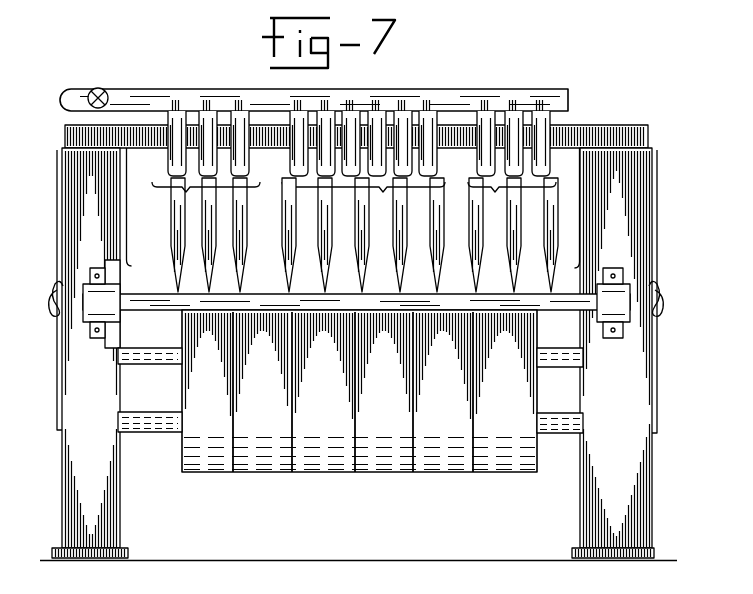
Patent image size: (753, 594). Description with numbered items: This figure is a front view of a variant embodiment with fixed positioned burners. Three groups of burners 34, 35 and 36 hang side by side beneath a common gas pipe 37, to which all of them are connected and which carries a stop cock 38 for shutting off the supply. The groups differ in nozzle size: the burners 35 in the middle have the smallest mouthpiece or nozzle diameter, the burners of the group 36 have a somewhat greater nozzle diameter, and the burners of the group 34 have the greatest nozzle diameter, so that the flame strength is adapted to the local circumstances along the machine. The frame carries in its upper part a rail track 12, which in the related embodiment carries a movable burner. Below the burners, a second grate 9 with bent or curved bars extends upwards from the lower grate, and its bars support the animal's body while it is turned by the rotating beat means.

The second grate 9 is at (316, 270).
The rail track 12 is at (632, 131).
The first group of burners 34 is at (206, 196).
The second group of burners 35 is at (363, 196).
The third group of burners 36 is at (513, 196).
The gas pipe 37 is at (560, 100).
The stop cock 38 is at (99, 88).